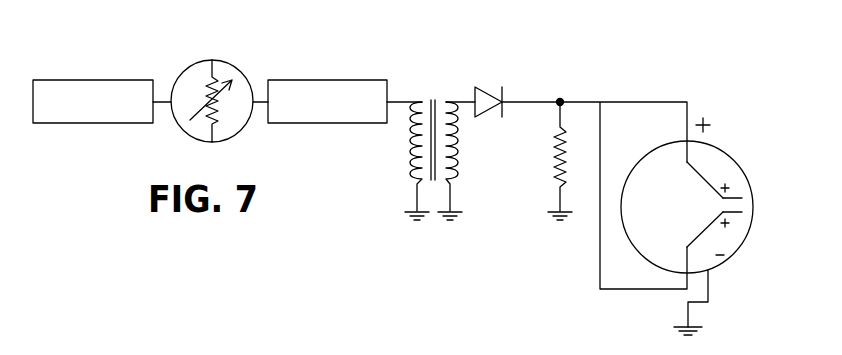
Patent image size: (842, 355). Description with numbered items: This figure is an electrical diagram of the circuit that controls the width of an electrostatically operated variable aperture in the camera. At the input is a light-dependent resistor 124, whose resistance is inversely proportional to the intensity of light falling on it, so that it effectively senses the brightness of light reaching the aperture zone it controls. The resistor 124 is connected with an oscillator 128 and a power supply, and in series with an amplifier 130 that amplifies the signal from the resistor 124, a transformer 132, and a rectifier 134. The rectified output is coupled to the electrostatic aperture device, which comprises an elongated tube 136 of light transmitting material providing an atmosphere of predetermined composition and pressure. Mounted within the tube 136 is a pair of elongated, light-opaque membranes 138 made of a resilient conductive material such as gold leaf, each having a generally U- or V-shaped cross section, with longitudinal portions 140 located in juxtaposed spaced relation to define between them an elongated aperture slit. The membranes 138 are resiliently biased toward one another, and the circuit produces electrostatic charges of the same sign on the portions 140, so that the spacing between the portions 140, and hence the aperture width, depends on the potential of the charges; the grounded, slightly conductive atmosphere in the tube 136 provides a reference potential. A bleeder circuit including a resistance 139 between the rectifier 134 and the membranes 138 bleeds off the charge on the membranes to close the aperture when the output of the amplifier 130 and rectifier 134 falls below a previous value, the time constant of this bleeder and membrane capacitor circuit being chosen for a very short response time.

The light-dependent resistor 124 is at (215, 60).
The oscillator 128 is at (60, 80).
The amplifier 130 is at (333, 80).
The transformer 132 is at (437, 91).
The rectifier 134 is at (487, 90).
The elongated tube 136 is at (665, 142).
The membranes 138 is at (705, 178).
The resistance 139 is at (556, 148).
The longitudinal portions 140 is at (737, 196).